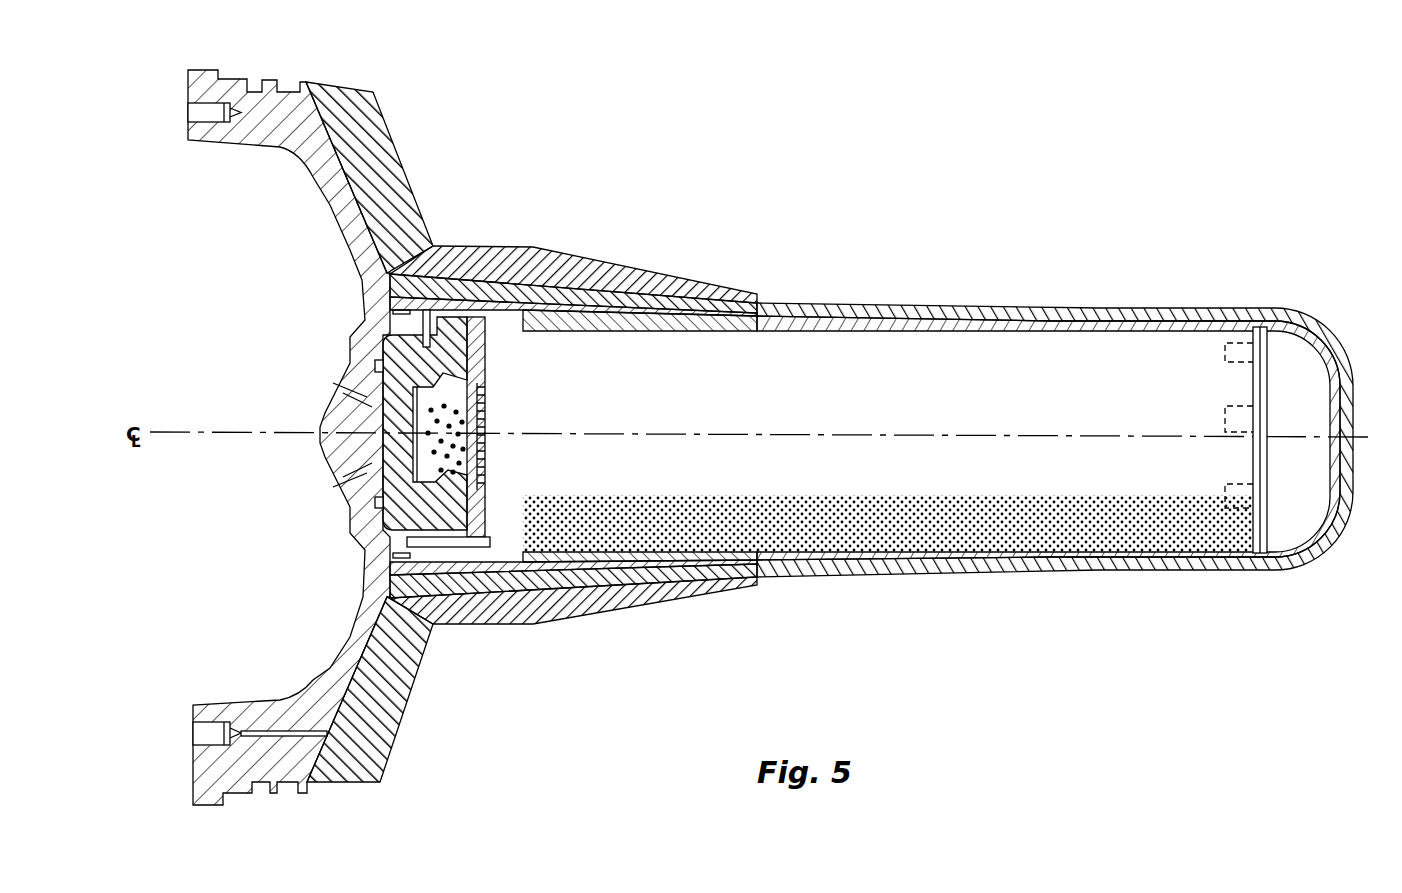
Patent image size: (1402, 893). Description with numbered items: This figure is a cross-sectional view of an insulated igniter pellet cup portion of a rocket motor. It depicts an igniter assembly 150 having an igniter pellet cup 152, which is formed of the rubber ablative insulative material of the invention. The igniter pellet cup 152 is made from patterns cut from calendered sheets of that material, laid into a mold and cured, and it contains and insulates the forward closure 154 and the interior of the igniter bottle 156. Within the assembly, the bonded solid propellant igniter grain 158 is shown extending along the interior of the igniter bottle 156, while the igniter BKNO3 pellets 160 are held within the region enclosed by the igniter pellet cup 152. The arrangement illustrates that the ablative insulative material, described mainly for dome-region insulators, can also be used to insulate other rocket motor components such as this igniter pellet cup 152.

The igniter assembly 150 is at (967, 228).
The igniter pellet cup 152 is at (447, 335).
The forward closure 154 is at (376, 388).
The igniter bottle 156 is at (640, 563).
The bonded solid propellant igniter grain 158 is at (993, 523).
The igniter BKNO3 pellets 160 is at (432, 463).